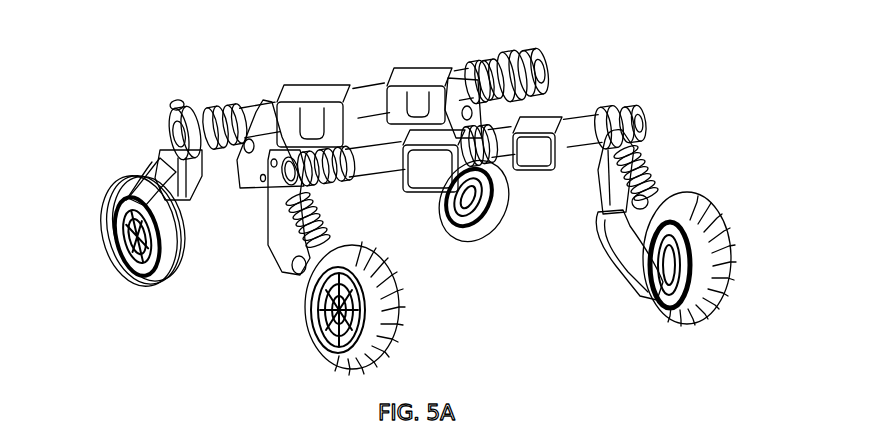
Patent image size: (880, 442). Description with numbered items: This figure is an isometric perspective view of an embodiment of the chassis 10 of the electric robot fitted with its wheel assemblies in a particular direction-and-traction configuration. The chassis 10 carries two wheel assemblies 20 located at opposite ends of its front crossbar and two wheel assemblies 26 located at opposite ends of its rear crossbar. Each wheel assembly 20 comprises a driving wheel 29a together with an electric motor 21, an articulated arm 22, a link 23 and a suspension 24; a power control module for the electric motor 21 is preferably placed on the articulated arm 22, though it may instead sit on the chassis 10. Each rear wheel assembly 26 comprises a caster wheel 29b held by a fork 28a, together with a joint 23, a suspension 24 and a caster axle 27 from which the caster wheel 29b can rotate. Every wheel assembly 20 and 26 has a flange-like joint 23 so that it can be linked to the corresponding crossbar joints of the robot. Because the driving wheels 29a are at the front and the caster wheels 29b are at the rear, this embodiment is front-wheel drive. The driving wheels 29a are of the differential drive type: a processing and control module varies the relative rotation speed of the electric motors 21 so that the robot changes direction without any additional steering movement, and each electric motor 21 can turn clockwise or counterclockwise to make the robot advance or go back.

The chassis 10 is at (258, 105).
The wheel assembly 20 is at (275, 240).
The electric motor 21 is at (670, 303).
The articulated arm 22 is at (630, 253).
The flange-like joint 23 is at (497, 68).
The suspension 24 is at (607, 173).
The wheel assembly 26 is at (192, 190).
The caster axle 27 is at (175, 104).
The fork 28a is at (138, 184).
The driving wheel 29a is at (397, 323).
The caster wheel 29b is at (153, 273).